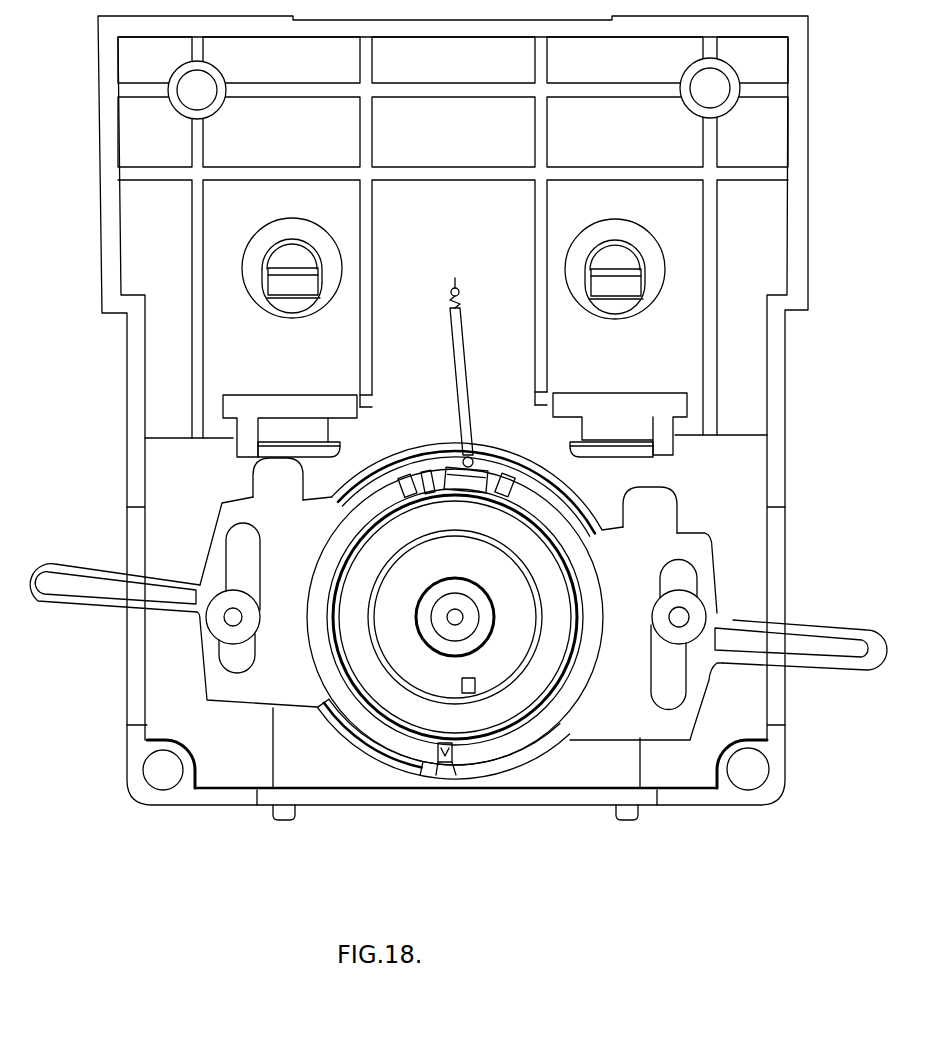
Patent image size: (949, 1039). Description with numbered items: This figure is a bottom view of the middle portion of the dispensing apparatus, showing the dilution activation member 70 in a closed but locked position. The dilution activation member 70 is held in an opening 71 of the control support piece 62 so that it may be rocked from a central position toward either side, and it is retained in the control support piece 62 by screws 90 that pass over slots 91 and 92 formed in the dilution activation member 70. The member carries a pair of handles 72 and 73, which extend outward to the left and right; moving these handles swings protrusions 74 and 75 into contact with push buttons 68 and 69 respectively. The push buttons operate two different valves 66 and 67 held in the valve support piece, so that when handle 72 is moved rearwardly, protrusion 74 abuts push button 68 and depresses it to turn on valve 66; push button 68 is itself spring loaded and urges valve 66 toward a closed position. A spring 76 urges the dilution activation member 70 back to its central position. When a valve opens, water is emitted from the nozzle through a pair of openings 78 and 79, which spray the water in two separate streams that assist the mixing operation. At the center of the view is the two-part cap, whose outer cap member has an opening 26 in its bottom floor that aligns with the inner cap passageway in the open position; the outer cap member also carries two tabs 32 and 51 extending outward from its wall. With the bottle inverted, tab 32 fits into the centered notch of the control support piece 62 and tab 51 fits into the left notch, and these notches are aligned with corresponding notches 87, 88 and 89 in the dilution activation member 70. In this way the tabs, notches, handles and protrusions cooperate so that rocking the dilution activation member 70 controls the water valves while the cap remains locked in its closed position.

The opening 26 is at (472, 680).
The tab 32 is at (455, 775).
The tab 51 is at (440, 470).
The control support piece 62 is at (453, 440).
The valve 66 is at (322, 425).
The valve 67 is at (618, 428).
The push button 68 is at (347, 462).
The push button 69 is at (590, 458).
The dilution activation member 70 is at (458, 574).
The opening 71 is at (542, 487).
The handle 72 is at (105, 562).
The handle 73 is at (813, 627).
The protrusion 74 is at (280, 475).
The protrusion 75 is at (653, 500).
The spring 76 is at (467, 368).
The opening 78 is at (295, 305).
The opening 79 is at (285, 273).
The notch 87 is at (438, 762).
The notch 88 is at (508, 483).
The notch 89 is at (435, 470).
The screws 90 is at (252, 617).
The slot 91 is at (257, 560).
The slot 92 is at (667, 693).